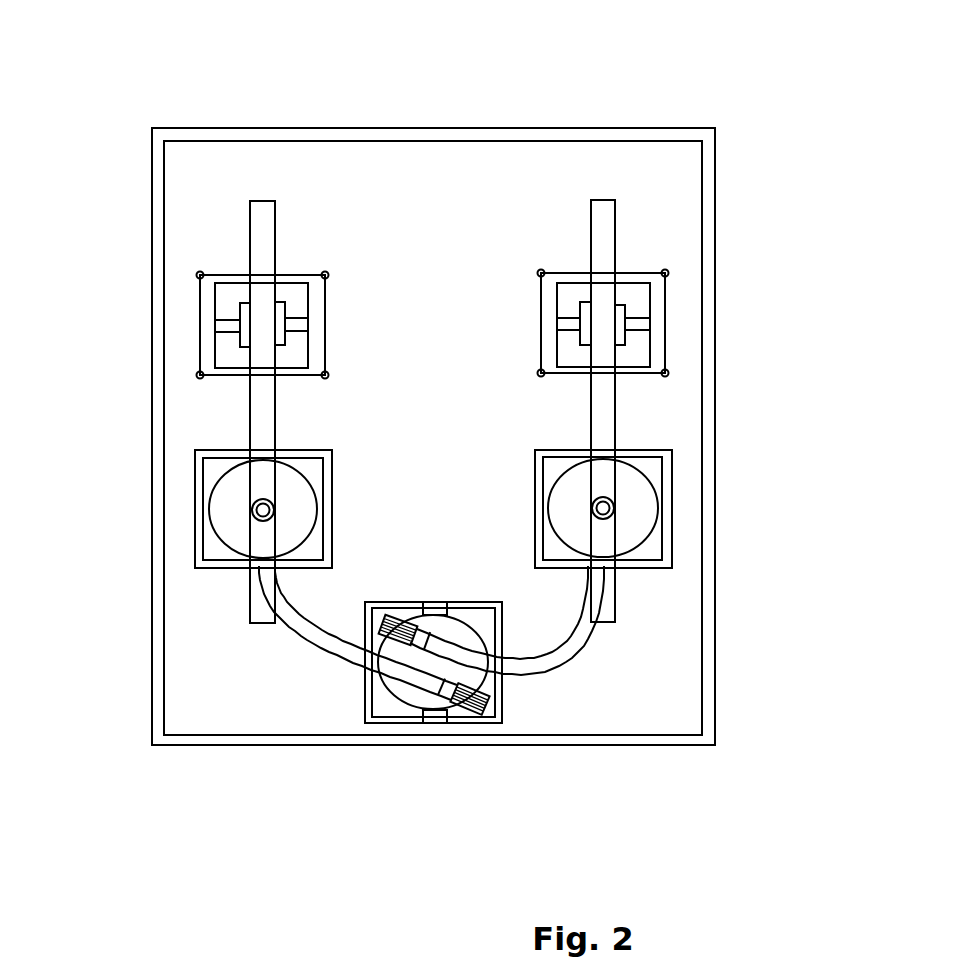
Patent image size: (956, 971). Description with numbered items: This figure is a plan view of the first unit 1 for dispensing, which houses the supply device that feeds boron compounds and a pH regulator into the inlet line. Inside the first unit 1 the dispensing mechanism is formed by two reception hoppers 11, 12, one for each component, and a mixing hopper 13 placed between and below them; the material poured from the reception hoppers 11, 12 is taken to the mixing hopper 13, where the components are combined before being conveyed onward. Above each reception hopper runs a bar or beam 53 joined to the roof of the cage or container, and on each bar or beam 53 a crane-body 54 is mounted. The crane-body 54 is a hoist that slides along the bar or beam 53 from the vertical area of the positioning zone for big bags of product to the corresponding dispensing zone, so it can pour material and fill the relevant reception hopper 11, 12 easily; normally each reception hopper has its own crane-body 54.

The first unit 1 is at (460, 117).
The bar or beam 53 is at (260, 240).
The crane-body 54 is at (245, 310).
The reception hopper 12 is at (237, 517).
The reception hopper 11 is at (637, 515).
The mixing hopper 13 is at (412, 695).